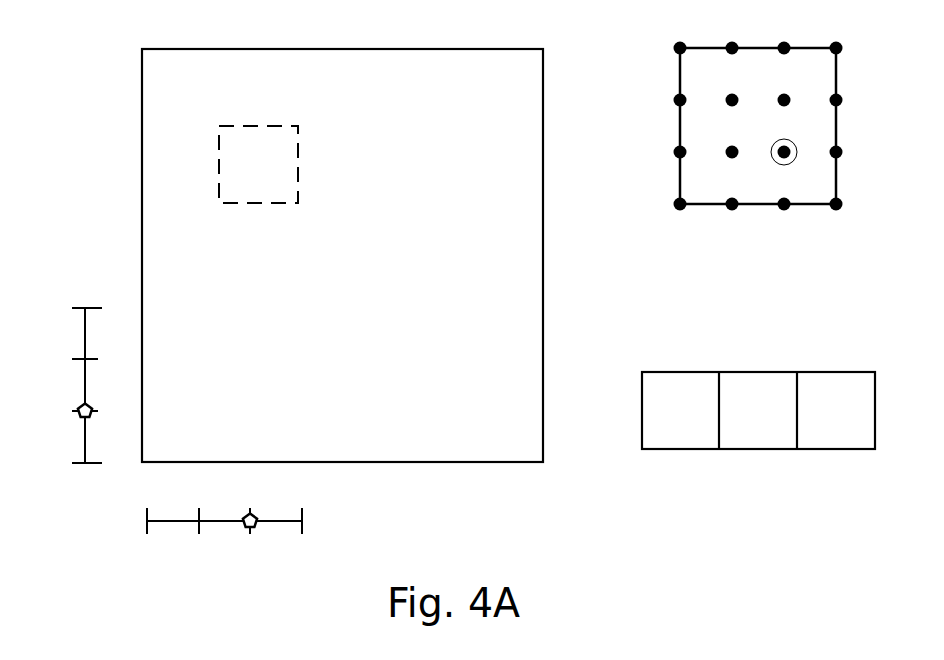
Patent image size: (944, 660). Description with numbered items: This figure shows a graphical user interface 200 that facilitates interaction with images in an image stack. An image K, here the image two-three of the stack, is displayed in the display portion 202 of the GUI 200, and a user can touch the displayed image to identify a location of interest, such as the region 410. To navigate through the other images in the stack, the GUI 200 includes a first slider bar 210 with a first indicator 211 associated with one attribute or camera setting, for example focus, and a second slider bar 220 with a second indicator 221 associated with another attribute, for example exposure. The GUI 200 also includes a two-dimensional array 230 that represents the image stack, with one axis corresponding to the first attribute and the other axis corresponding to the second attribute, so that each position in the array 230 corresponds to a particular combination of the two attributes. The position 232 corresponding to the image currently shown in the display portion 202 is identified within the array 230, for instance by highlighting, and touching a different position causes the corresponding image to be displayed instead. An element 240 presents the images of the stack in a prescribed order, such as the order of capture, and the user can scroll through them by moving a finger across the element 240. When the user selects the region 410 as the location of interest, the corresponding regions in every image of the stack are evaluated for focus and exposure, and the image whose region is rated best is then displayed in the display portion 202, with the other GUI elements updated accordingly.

The graphical user interface 200 is at (100, 45).
The display portion 202 is at (208, 98).
The region 410 is at (273, 173).
The first slider bar 210 is at (67, 288).
The first indicator 211 is at (63, 399).
The second slider bar 220 is at (326, 515).
The second indicator 221 is at (233, 541).
The two-dimensional array 230 is at (688, 227).
The position 232 is at (774, 180).
The element 240 is at (796, 349).